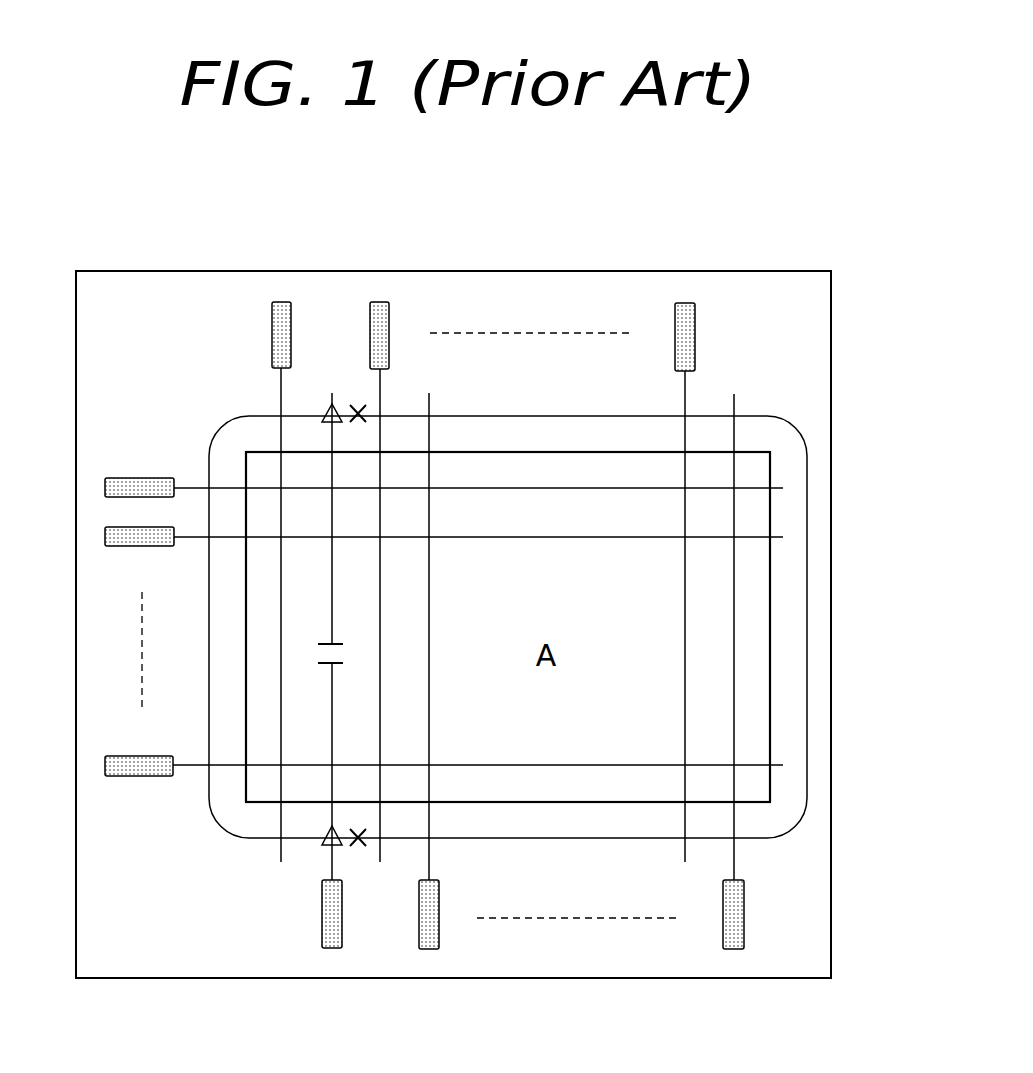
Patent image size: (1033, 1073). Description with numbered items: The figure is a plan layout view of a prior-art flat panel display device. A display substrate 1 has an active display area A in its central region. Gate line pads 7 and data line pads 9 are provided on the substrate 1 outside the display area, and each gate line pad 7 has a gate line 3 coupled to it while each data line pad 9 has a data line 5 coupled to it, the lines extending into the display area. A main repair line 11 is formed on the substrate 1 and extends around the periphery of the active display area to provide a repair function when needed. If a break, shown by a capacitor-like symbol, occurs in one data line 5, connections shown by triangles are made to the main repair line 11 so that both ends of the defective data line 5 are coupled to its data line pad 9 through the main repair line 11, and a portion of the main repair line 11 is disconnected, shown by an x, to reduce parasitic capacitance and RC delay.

The display substrate 1 is at (831, 380).
The gate line 3 is at (194, 538).
The data line 5 is at (281, 397).
The gate line pad 7 is at (105, 487).
The data line pad 9 is at (272, 325).
The main repair line 11 is at (808, 495).